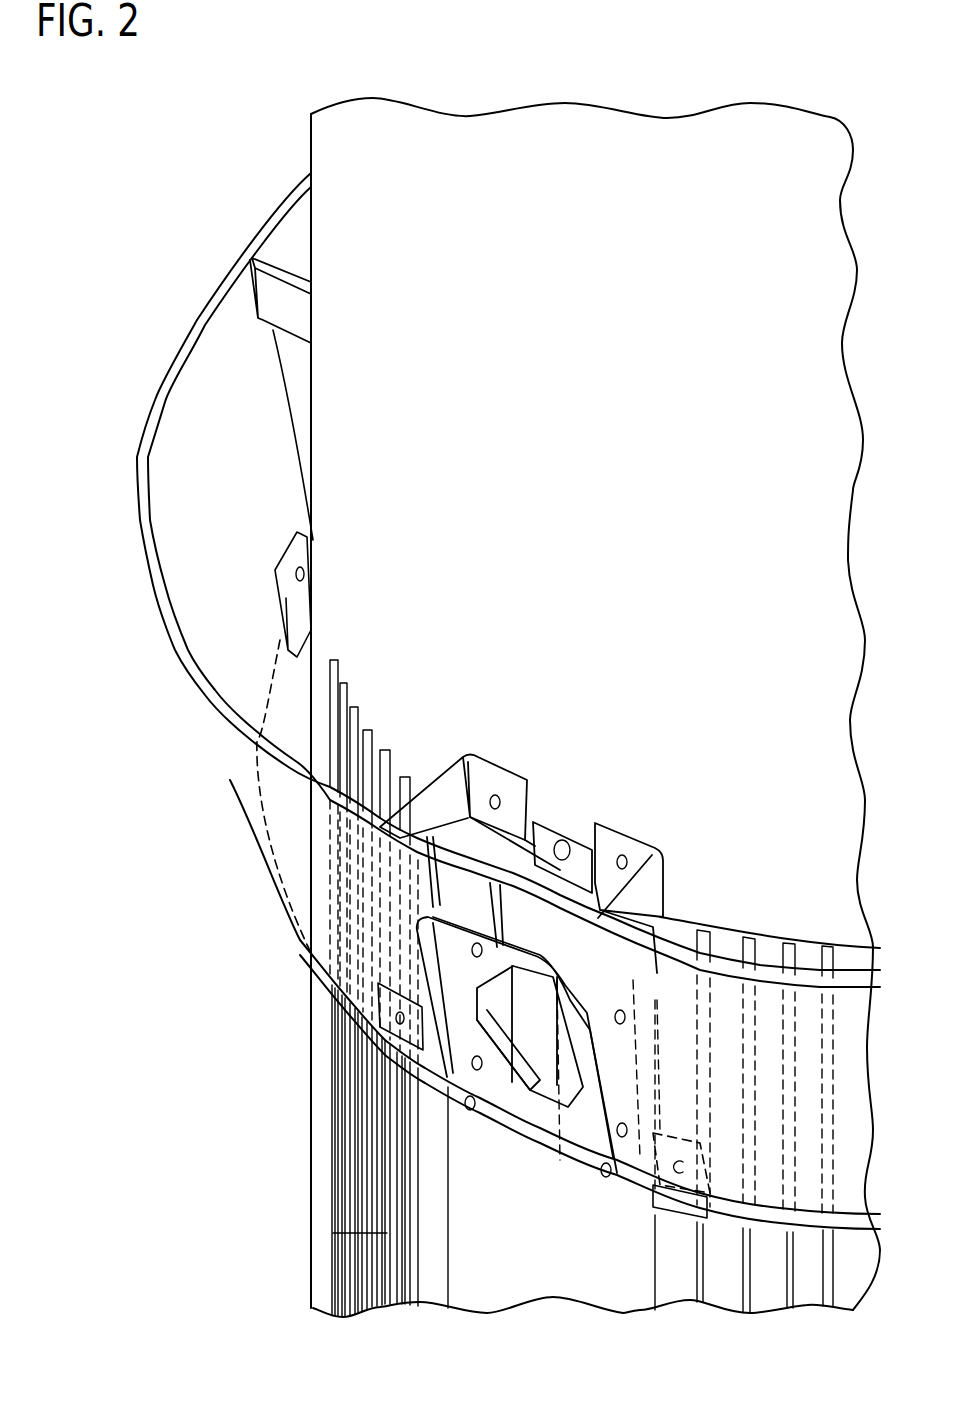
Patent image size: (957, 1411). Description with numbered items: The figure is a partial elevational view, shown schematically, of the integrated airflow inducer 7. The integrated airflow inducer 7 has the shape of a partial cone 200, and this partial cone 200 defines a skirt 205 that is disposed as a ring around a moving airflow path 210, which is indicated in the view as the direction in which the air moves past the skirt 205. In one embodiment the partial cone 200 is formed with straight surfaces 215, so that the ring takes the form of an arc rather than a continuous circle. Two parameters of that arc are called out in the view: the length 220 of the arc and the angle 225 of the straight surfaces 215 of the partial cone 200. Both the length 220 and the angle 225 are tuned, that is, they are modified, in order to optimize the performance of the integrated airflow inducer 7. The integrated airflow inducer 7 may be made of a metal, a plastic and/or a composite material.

The integrated airflow inducer 7 is at (120, 608).
The partial cone 200 is at (137, 486).
The skirt 205 is at (240, 497).
The moving airflow path 210 is at (398, 498).
The straight surfaces 215 is at (185, 450).
The length of the arc 220 is at (248, 178).
The angle of the straight surfaces 225 is at (233, 420).